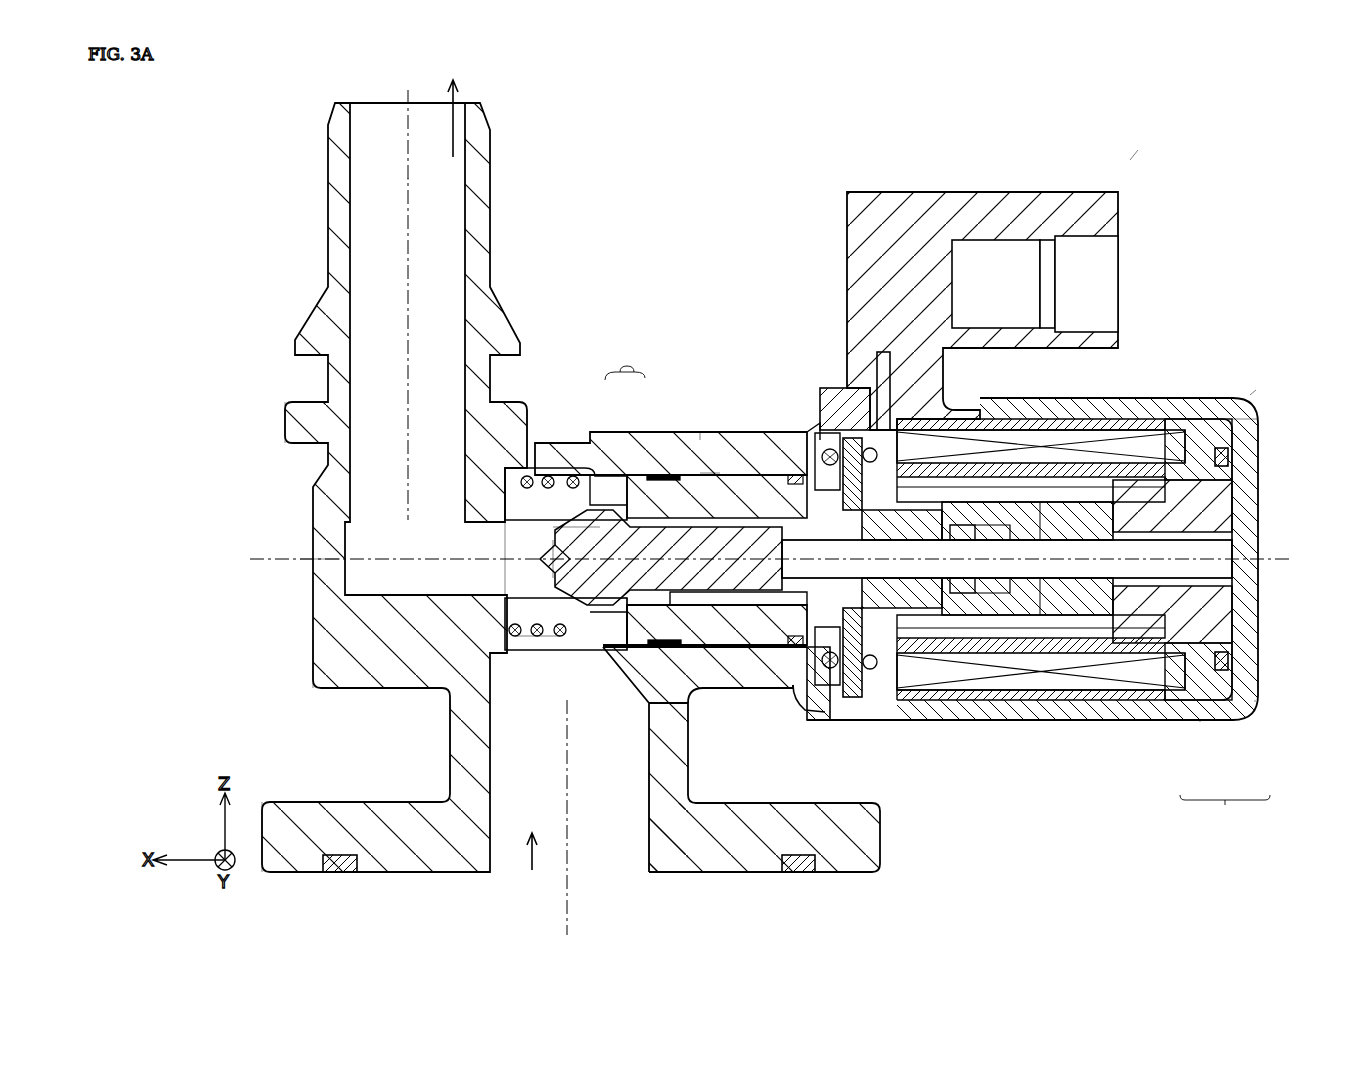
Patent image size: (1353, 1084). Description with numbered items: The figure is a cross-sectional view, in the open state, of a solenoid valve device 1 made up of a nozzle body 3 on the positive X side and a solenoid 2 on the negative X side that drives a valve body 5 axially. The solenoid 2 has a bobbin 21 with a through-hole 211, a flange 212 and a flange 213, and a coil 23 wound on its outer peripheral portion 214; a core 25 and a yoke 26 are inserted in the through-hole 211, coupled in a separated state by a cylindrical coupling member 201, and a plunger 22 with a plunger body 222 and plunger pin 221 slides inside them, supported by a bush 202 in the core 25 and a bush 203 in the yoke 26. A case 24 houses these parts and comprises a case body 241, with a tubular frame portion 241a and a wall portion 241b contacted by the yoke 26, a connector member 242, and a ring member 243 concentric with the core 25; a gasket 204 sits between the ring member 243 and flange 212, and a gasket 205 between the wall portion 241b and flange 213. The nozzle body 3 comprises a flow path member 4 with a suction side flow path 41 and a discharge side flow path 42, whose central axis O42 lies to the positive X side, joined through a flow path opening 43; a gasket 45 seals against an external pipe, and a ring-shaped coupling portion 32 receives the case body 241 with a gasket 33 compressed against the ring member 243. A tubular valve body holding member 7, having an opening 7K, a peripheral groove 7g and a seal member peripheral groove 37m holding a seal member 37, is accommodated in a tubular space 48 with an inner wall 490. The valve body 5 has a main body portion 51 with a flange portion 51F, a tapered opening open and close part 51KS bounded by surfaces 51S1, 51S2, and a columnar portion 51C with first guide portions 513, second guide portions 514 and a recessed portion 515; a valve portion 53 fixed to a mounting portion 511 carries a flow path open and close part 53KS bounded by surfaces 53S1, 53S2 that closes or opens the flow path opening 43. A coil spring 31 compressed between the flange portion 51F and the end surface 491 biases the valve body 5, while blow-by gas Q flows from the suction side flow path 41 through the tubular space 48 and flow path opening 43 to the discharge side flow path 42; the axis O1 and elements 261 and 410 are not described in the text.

The solenoid valve device 1 is at (1145, 157).
The solenoid 2 is at (1256, 352).
The nozzle body 3 is at (268, 318).
The flow path member 4 is at (274, 478).
The valve body 5 is at (625, 361).
The tubular valve body holding member 7 is at (690, 712).
The opening 7K is at (605, 650).
The peripheral groove 7g is at (700, 470).
The bobbin 21 is at (1192, 420).
The plunger 22 is at (1125, 430).
The coil 23 is at (1028, 430).
The case 24 is at (1258, 380).
The core 25 is at (920, 585).
The yoke 26 is at (1090, 615).
The coil spring 31 is at (540, 658).
The coupling portion 32 is at (818, 428).
The gasket 33 is at (853, 700).
The seal member 37 is at (812, 700).
The seal member peripheral groove 37m is at (795, 698).
The suction side flow path 41 is at (490, 794).
The discharge side flow path 42 is at (372, 262).
The flow path opening 43 is at (515, 470).
The gasket 45 is at (803, 872).
The tubular space 48 is at (712, 690).
The main body portion 51 is at (685, 515).
The columnar portion 51C is at (698, 432).
The flange portion 51F is at (600, 660).
The opening open and close part 51KS is at (620, 655).
The surface 51S1 is at (600, 615).
The surface 51S2 is at (555, 600).
The valve portion 53 is at (575, 478).
The flow path open and close part 53KS is at (505, 545).
The surface 53S1 is at (505, 547).
The surface 53S2 is at (550, 656).
The coupling member 201 is at (1020, 610).
The bush 202 is at (925, 610).
The bush 203 is at (1155, 645).
The gasket 204 is at (868, 672).
The gasket 205 is at (1230, 457).
The through-hole 211 is at (1185, 445).
The flange 212 is at (893, 400).
The flange 213 is at (1240, 420).
The outer peripheral portion 214 is at (1072, 485).
The plunger pin 221 is at (968, 600).
The plunger body 222 is at (1000, 600).
The case body 241 is at (1225, 809).
The frame portion 241a is at (1210, 722).
The wall portion 241b is at (1245, 715).
The connector member 242 is at (975, 205).
The ring member 243 is at (830, 392).
The core bore 261 is at (1240, 497).
The base recess 410 is at (445, 692).
The inner wall 490 is at (700, 470).
The end surface 491 is at (600, 436).
The mounting portion 511 is at (500, 572).
The first guide portions 513 is at (665, 655).
The second guide portions 514 is at (752, 688).
The recessed portion 515 is at (795, 520).
The axis O1 is at (285, 555).
The central axis O42 is at (408, 176).
The blow-by gas Q is at (458, 88).